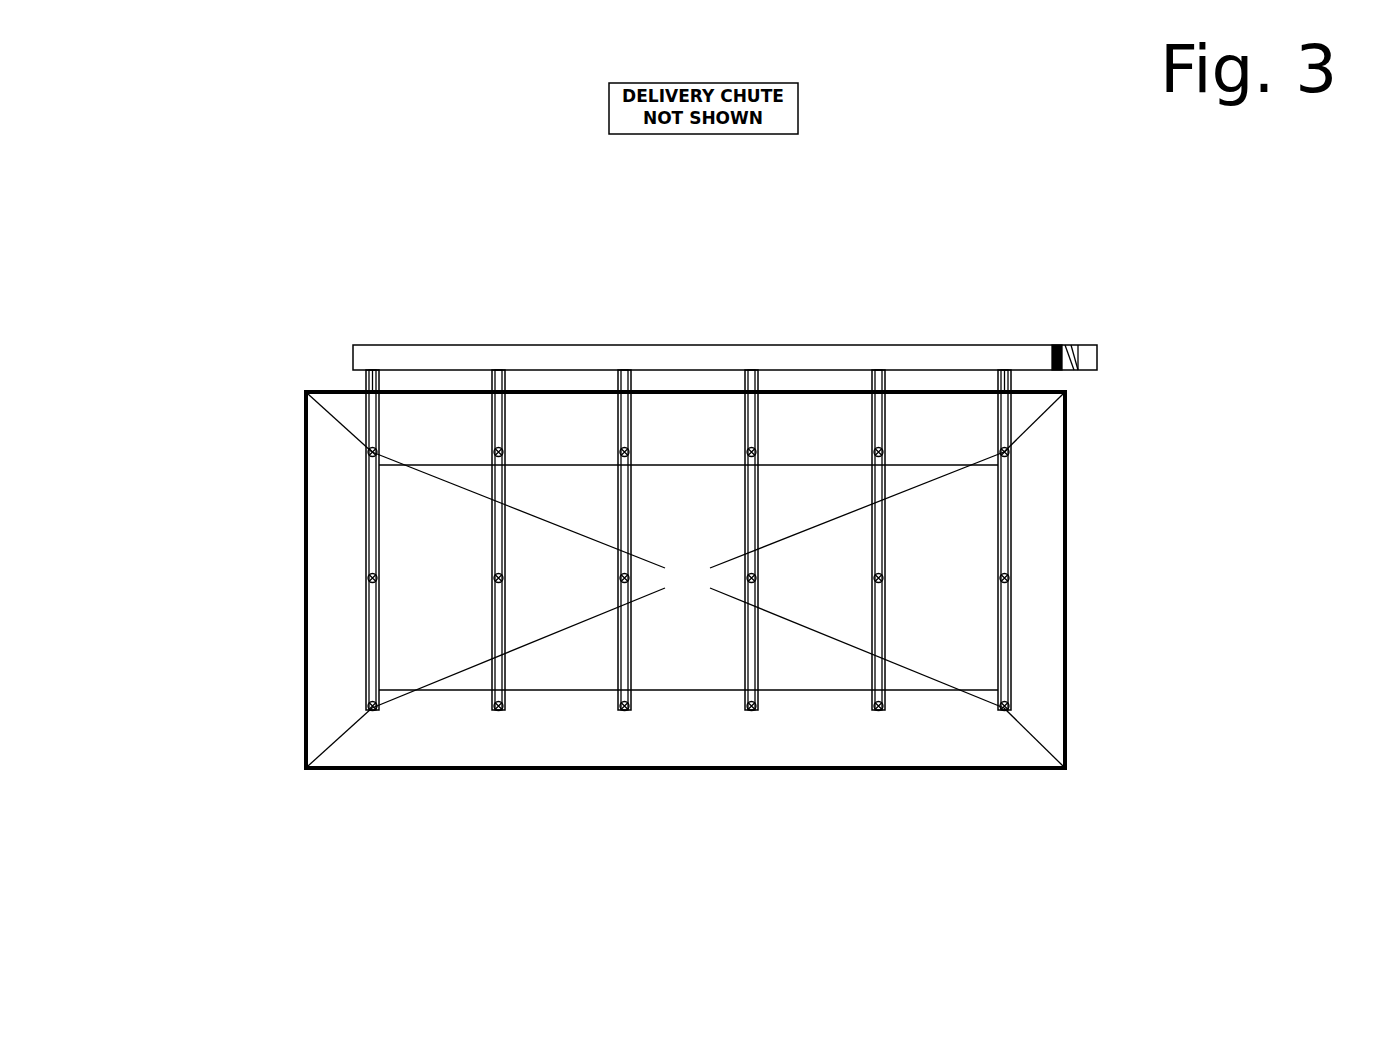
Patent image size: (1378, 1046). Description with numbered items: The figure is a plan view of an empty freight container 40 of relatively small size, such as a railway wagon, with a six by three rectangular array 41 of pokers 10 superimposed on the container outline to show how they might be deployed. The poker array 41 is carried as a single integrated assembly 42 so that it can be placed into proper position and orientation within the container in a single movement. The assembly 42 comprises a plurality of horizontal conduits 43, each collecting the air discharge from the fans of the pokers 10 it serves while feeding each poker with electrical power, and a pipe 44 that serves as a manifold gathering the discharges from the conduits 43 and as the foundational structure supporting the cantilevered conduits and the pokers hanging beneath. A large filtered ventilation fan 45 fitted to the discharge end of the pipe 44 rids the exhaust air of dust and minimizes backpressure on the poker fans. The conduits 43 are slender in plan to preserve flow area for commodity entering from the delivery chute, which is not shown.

The poker 10 is at (1010, 455).
The freight container 40 is at (687, 620).
The rectangular array of pokers 41 is at (685, 580).
The single integrated assembly 42 is at (688, 357).
The horizontal conduits 43 is at (490, 507).
The pipe 44 is at (432, 357).
The filtered ventilation fan 45 is at (1075, 319).